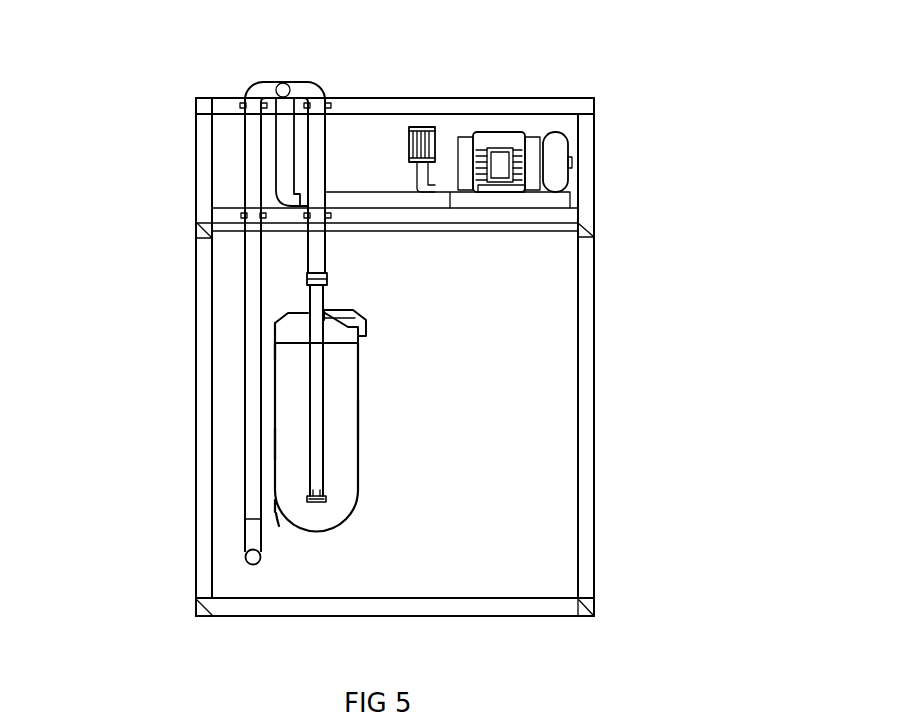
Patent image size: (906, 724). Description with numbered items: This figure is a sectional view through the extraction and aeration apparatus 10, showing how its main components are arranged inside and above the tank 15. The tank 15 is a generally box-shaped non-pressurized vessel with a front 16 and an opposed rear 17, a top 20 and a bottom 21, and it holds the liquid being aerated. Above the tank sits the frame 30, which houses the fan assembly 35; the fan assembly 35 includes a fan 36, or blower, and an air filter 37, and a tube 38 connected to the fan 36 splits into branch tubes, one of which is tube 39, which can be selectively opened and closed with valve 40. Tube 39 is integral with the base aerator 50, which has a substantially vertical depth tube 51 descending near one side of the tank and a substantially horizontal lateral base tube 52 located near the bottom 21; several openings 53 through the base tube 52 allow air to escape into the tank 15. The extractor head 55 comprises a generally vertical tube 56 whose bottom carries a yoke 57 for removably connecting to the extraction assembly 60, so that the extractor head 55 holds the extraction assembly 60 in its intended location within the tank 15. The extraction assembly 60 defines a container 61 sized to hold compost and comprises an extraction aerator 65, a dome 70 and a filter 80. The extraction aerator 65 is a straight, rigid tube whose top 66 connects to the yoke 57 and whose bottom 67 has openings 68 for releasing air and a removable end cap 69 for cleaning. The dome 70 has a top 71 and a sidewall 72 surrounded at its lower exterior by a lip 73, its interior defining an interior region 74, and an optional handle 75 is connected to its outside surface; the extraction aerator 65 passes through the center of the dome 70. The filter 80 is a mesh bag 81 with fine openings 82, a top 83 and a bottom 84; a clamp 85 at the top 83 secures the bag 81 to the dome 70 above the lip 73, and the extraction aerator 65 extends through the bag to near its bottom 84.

The extraction and aeration apparatus 10 is at (658, 93).
The tank 15 is at (595, 463).
The first side (front) 16 is at (197, 306).
The second side (rear) 17 is at (594, 578).
The top 20 is at (212, 226).
The bottom 21 is at (218, 616).
The frame 30 is at (597, 122).
The fan assembly 35 is at (548, 133).
The fan 36 is at (500, 132).
The air filter 37 is at (437, 127).
The tube 38 is at (293, 143).
The tube 39 is at (244, 148).
The valve 40 is at (325, 167).
The base aerator 50 is at (245, 418).
The depth tube 51 is at (245, 390).
The lateral base tube 52 is at (250, 565).
The openings 53 is at (258, 565).
The extractor head 55 is at (325, 242).
The vertical tube 56 is at (325, 235).
The yoke 57 is at (327, 279).
The extraction assembly 60 is at (467, 545).
The container 61 is at (622, 628).
The extraction aerator 65 is at (358, 418).
The top 66 is at (327, 293).
The bottom 67 is at (325, 493).
The openings 68 is at (323, 493).
The end cap 69 is at (318, 500).
The dome 70 is at (275, 323).
The top 71 is at (197, 205).
The sidewall 72 is at (275, 336).
The lip 73 is at (277, 348).
The interior region 74 is at (303, 314).
The handle 75 is at (366, 316).
The filter 80 is at (275, 450).
The mesh bag 81 is at (277, 508).
The openings 82 is at (287, 435).
The top 83 is at (358, 345).
The bottom 84 is at (277, 517).
The clamp 85 is at (360, 338).